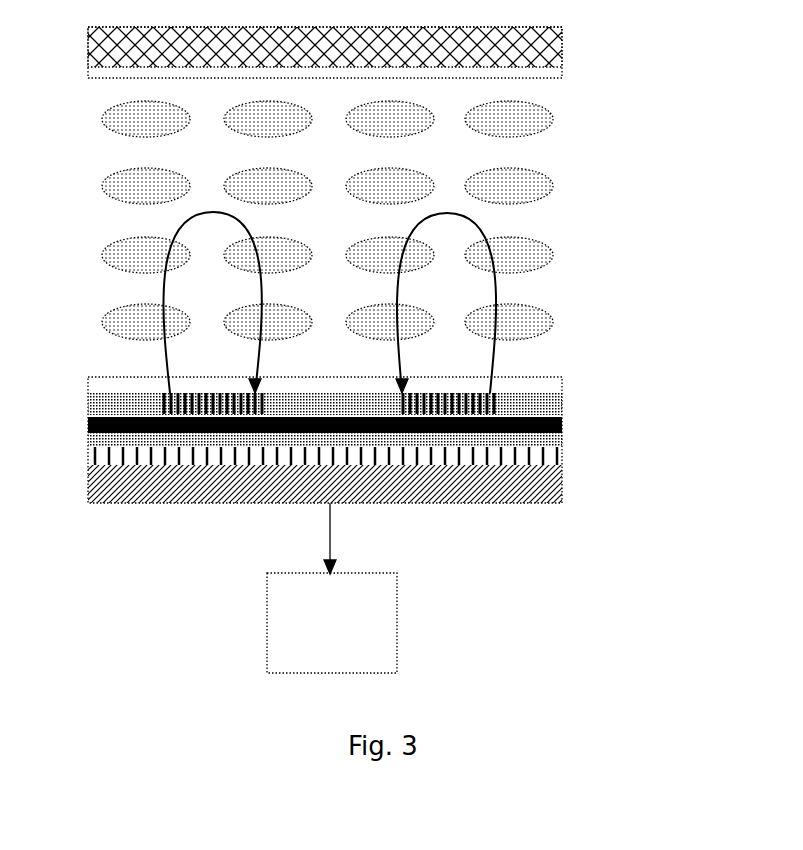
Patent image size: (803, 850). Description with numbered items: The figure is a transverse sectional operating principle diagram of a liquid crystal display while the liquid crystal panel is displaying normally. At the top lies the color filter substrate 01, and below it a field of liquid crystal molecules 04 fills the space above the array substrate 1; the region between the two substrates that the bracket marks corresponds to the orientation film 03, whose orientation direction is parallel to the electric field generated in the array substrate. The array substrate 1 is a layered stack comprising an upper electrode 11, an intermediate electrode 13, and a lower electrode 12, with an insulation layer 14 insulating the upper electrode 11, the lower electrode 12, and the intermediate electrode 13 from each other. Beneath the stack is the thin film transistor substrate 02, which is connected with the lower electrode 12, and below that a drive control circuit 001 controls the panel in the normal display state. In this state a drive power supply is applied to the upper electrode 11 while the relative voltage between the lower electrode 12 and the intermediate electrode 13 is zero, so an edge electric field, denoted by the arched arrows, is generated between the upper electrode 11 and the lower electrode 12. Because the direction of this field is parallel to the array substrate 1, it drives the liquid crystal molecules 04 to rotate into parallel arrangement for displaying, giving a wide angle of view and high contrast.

The color filter substrate 01 is at (562, 40).
The thin film transistor substrate 02 is at (562, 489).
The orientation film 03 is at (404, 232).
The liquid crystal molecule 04 is at (367, 220).
The array substrate 1 is at (383, 442).
The upper electrode 11 is at (562, 397).
The lower electrode 12 is at (562, 459).
The intermediate electrode 13 is at (562, 421).
The insulation layer 14 is at (562, 410).
The drive control circuit 001 is at (332, 588).